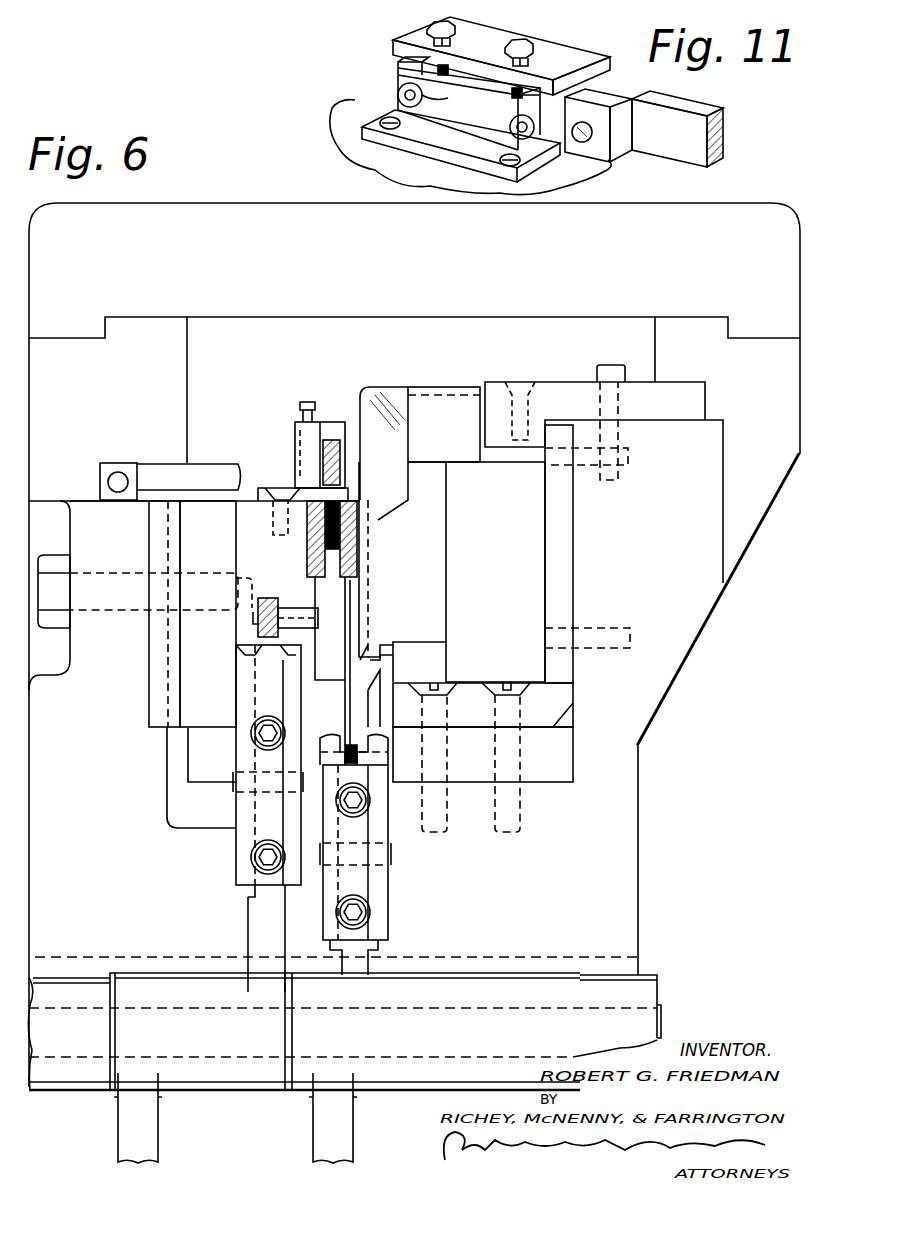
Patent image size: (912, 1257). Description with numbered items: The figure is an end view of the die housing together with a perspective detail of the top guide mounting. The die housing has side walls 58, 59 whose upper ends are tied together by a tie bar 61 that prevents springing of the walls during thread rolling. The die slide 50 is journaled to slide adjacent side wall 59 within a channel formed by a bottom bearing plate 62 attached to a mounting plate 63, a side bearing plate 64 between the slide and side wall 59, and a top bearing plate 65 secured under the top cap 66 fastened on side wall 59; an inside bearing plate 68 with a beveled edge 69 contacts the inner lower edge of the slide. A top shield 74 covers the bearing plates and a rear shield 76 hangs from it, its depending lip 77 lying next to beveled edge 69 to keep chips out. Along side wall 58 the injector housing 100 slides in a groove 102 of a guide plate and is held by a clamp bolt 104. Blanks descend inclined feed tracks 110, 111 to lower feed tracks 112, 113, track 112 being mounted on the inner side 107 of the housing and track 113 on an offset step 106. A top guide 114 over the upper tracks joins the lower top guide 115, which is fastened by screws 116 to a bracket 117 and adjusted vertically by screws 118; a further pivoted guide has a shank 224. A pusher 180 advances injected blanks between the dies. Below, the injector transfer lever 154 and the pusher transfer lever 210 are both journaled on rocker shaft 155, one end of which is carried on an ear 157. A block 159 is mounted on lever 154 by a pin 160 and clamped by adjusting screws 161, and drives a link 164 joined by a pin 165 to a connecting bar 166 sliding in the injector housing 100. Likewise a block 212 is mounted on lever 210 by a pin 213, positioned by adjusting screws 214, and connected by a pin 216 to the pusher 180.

In FIG. 6, the tie bar 61 is at (441, 261).
In FIG. 6, the shank 224 is at (163, 468).
In FIG. 6, the clamp bolt 104 is at (58, 568).
In FIG. 6, the side wall 58 is at (135, 556).
In FIG. 6, the groove 102 is at (158, 642).
In FIG. 11, the injector housing 100 is at (332, 110).
In FIG. 6, the injector housing 100 is at (220, 664).
In FIG. 11, the bracket 117 is at (418, 148).
In FIG. 6, the bracket 117 is at (262, 488).
In FIG. 11, the lower top guide 115 is at (572, 54).
In FIG. 6, the lower top guide 115 is at (333, 422).
In FIG. 11, the screws 118 is at (505, 50).
In FIG. 6, the screws 118 is at (304, 402).
In FIG. 11, the top guide 114 is at (703, 114).
In FIG. 6, the top guide 114 is at (336, 456).
In FIG. 11, the screws 116 is at (510, 128).
In FIG. 6, the top shield 74 is at (440, 392).
In FIG. 6, the top cap 66 is at (578, 390).
In FIG. 6, the top bearing plate 65 is at (548, 440).
In FIG. 6, the side bearing plate 64 is at (572, 578).
In FIG. 6, the side wall 59 is at (700, 615).
In FIG. 6, the die slide 50 is at (497, 525).
In FIG. 6, the rear shield 76 is at (440, 582).
In FIG. 6, the feed track 110 is at (312, 566).
In FIG. 6, the feed track 111 is at (350, 562).
In FIG. 6, the lower feed track 112 is at (294, 545).
In FIG. 6, the link 164 is at (258, 606).
In FIG. 6, the pin 165 is at (255, 622).
In FIG. 6, the connecting bar 166 is at (280, 600).
In FIG. 6, the inner side 107 is at (318, 612).
In FIG. 6, the lower feed track 113 is at (348, 607).
In FIG. 6, the offset step 106 is at (330, 688).
In FIG. 6, the pusher 180 is at (362, 620).
In FIG. 6, the depending lip 77 is at (368, 645).
In FIG. 6, the beveled edge 69 is at (380, 655).
In FIG. 6, the inside bearing plate 68 is at (393, 680).
In FIG. 6, the bearing plate 62 is at (568, 705).
In FIG. 6, the mounting plate 63 is at (570, 768).
In FIG. 6, the block 159 is at (236, 812).
In FIG. 6, the pin 160 is at (232, 782).
In FIG. 6, the adjusting screws 161 is at (252, 735).
In FIG. 6, the pin 216 is at (388, 752).
In FIG. 6, the block 212 is at (386, 892).
In FIG. 6, the pin 213 is at (391, 853).
In FIG. 6, the adjusting screws 214 is at (366, 806).
In FIG. 6, the transfer lever 154 is at (168, 973).
In FIG. 6, the ear 157 is at (645, 976).
In FIG. 6, the rocker shaft 155 is at (660, 1018).
In FIG. 6, the transfer lever 210 is at (310, 1093).